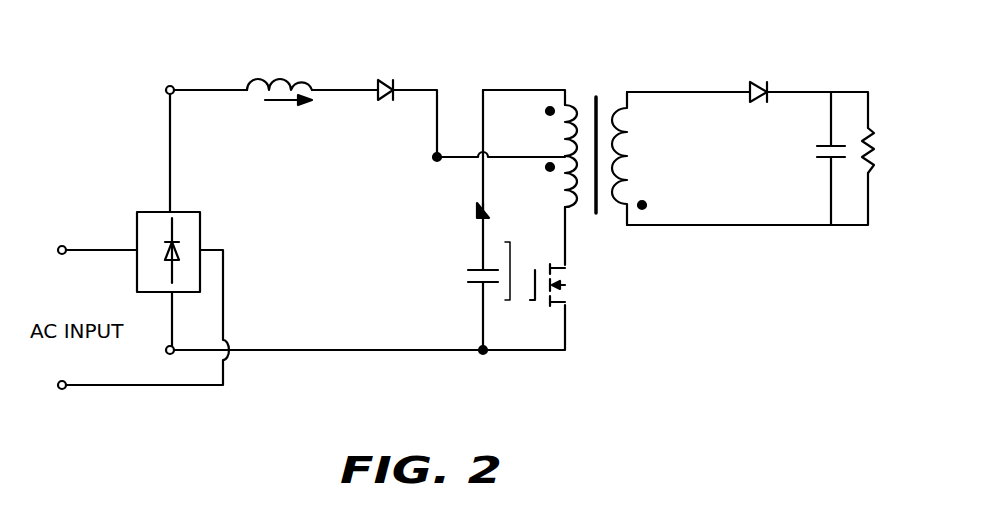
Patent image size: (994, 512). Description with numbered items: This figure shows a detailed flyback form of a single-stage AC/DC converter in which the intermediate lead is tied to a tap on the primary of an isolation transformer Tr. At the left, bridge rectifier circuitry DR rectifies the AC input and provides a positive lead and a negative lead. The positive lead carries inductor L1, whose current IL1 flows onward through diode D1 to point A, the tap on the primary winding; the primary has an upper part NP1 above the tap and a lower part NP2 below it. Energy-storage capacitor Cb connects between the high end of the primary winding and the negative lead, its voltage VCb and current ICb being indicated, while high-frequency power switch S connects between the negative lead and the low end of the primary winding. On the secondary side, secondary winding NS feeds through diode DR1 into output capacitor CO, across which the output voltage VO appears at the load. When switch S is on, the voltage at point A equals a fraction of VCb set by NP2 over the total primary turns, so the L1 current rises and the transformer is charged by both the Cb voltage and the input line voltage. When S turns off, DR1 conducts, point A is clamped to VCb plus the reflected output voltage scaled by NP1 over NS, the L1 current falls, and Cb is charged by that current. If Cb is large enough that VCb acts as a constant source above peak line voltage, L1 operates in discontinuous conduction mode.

The rectifier circuitry DR is at (143, 288).
The inductor L1 is at (279, 69).
The L1 current IL1 is at (280, 113).
The diode D1 is at (390, 76).
The point A is at (433, 162).
The energy-storage capacitor Cb is at (473, 222).
The Cb current ICb is at (477, 207).
The Cb voltage VCb is at (513, 278).
The high-frequency power switch S is at (559, 285).
The isolation transformer Tr is at (584, 143).
The upper primary winding part NP1 is at (545, 130).
The lower primary winding part NP2 is at (544, 181).
The secondary winding NS is at (634, 158).
The secondary diode DR1 is at (771, 75).
The output capacitor CO is at (816, 158).
The output voltage VO is at (883, 154).